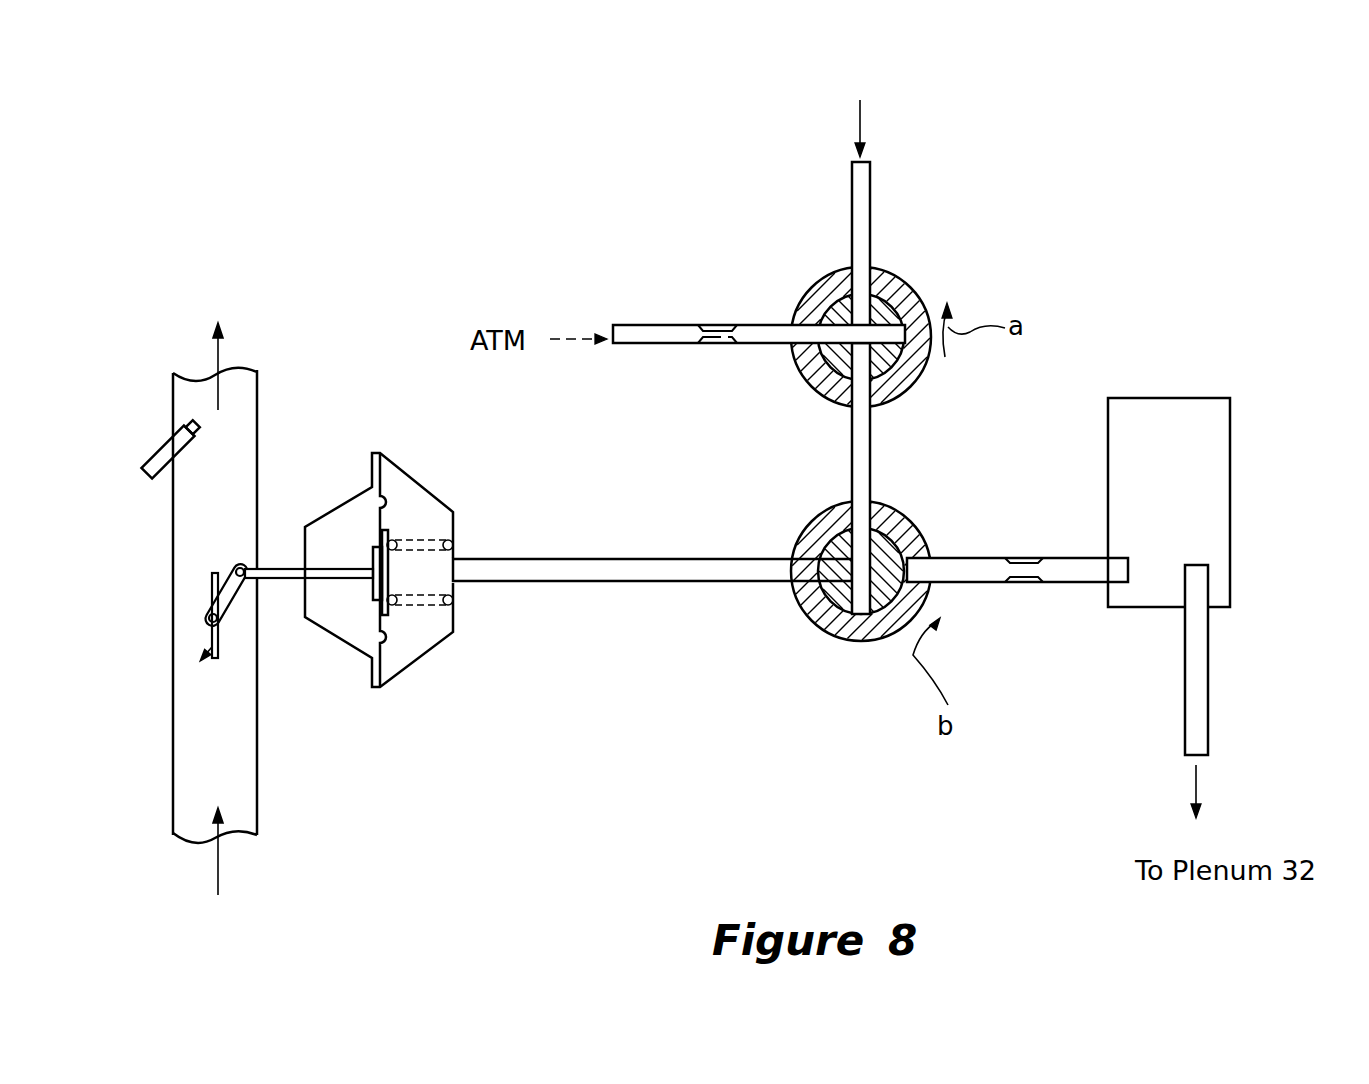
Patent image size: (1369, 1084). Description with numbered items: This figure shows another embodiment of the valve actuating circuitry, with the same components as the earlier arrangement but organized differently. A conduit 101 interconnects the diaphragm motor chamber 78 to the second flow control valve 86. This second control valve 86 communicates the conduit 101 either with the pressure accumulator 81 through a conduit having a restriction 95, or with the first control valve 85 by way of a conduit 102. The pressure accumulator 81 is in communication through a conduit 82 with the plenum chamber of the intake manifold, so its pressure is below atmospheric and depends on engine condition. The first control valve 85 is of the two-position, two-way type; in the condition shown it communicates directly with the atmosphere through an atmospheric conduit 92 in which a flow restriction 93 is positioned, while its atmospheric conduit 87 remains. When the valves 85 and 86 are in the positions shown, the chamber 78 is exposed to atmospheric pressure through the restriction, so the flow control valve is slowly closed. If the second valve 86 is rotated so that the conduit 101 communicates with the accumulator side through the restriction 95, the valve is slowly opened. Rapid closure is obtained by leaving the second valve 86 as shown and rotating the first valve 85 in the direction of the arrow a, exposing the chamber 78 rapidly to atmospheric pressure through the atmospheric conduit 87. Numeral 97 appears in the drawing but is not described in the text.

The diaphragm motor chamber 78 is at (412, 505).
The pressure accumulator 81 is at (1107, 460).
The conduit 82 is at (1208, 685).
The first control valve 85 is at (908, 268).
The second control valve 86 is at (788, 630).
The atmospheric conduit 87 is at (850, 200).
The atmospheric conduit 92 is at (630, 320).
The flow restriction 93 is at (714, 322).
The restriction 95 is at (1028, 584).
The plenum arm 97 is at (972, 556).
The conduit 101 is at (655, 585).
The conduit 102 is at (850, 460).